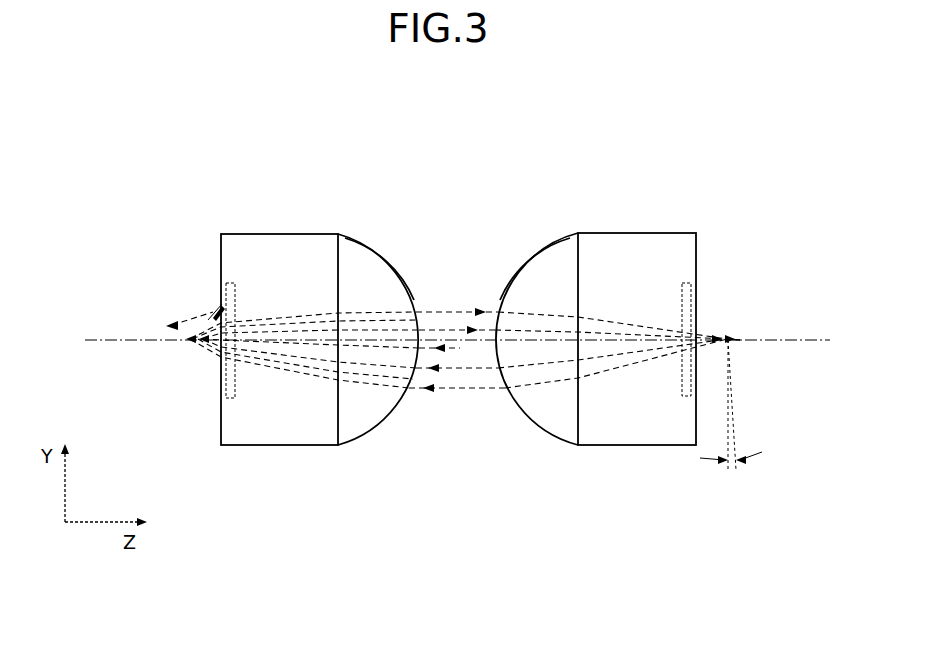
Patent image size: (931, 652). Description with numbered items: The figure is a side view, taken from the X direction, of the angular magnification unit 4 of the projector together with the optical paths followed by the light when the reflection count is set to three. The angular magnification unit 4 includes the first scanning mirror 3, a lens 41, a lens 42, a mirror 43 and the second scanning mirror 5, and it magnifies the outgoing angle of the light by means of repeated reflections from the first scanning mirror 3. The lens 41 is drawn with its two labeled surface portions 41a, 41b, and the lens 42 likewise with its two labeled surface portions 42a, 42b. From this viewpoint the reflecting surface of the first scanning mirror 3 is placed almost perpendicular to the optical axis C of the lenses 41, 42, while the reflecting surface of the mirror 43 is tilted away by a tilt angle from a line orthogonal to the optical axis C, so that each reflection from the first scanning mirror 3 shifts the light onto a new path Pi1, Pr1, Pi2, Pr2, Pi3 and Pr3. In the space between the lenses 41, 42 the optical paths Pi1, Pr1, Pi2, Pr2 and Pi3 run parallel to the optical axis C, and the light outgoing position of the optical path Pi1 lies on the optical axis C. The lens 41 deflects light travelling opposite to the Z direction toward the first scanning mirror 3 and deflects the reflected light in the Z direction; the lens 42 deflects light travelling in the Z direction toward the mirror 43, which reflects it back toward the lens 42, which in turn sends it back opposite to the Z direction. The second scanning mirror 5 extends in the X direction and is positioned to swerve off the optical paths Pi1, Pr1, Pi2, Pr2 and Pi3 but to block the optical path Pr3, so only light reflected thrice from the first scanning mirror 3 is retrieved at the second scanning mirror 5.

The first scanning mirror 3 is at (188, 344).
The angular magnification unit 4 is at (466, 159).
The second scanning mirror 5 is at (212, 310).
The lens 41 is at (310, 223).
The convex surface of first lens 41a is at (353, 243).
The incident surface region of first lens 41b is at (223, 293).
The lens 42 is at (608, 224).
The convex surface of second lens 42a is at (560, 242).
The exit surface region of second lens 42b is at (698, 292).
The mirror 43 is at (730, 335).
The optical path Pr1 is at (437, 308).
The optical path Pr2 is at (474, 322).
The optical path Pr3 is at (172, 322).
The optical path Pi1 is at (398, 350).
The optical path Pi2 is at (467, 390).
The optical path Pi3 is at (488, 392).
The optical axis C is at (800, 336).